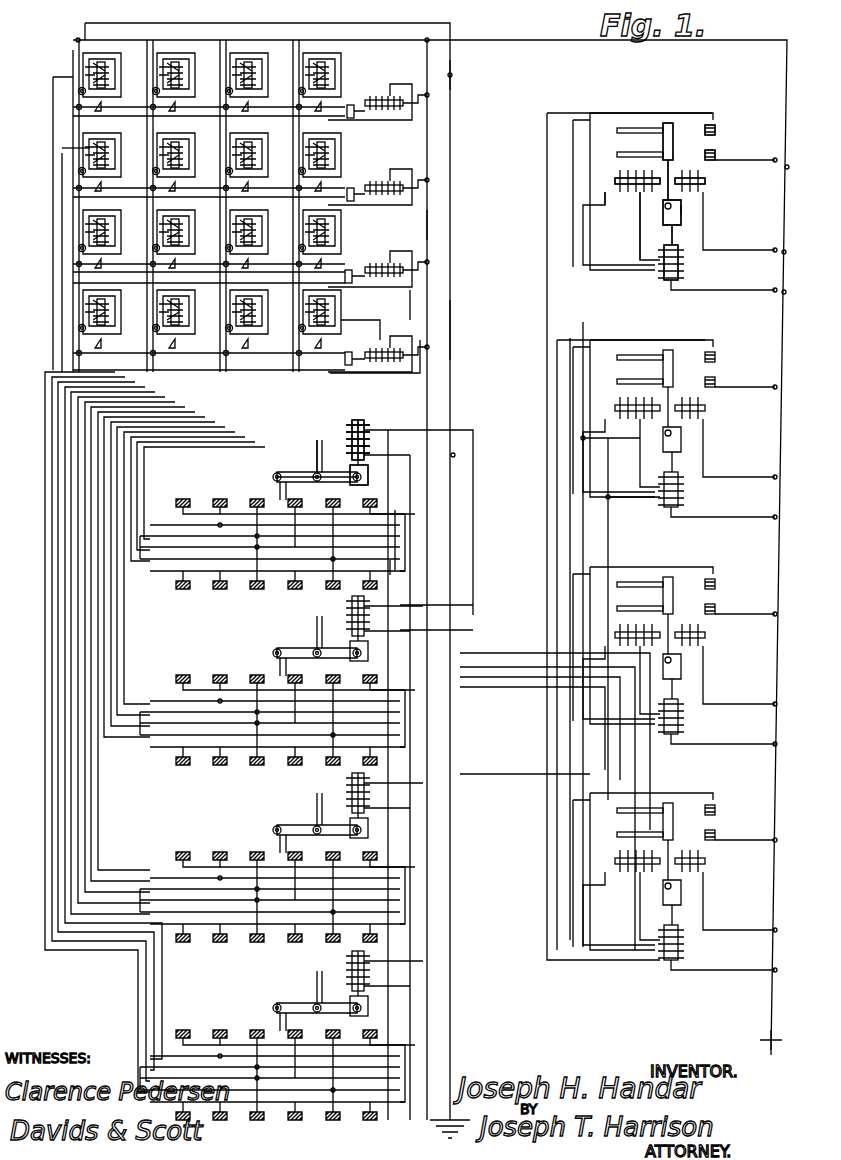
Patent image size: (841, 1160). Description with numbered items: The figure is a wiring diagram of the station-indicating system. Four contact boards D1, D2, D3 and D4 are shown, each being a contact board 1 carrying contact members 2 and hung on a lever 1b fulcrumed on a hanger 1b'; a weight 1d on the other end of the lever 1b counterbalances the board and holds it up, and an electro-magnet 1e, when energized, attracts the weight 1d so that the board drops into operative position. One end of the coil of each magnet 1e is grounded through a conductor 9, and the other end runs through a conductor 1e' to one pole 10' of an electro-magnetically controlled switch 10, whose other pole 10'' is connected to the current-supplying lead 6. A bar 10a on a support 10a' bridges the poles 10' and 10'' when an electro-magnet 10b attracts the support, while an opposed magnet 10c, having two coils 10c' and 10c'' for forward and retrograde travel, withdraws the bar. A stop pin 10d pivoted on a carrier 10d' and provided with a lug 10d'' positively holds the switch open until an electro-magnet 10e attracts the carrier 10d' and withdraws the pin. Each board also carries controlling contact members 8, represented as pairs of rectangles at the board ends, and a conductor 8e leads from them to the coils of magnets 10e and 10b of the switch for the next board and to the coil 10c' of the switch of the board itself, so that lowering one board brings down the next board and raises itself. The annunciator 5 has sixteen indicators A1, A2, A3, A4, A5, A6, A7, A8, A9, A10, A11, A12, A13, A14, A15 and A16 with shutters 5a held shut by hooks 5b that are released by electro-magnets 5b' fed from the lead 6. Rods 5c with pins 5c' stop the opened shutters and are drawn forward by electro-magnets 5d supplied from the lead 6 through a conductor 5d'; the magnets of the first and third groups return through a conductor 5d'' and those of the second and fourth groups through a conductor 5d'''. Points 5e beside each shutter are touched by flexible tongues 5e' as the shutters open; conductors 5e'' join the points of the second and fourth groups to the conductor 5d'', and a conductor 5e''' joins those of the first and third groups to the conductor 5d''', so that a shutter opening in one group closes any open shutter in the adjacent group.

The contact board 1 is at (405, 507).
The lever 1b is at (297, 726).
The hanger 1b' is at (301, 703).
The weight 1d is at (368, 474).
The electro-magnet 1e is at (355, 688).
The conductor 1e' is at (556, 454).
The contact members 2 is at (216, 506).
The annunciator 5 is at (440, 372).
The shutters 5a is at (349, 352).
The hooks 5b is at (364, 321).
The electro-magnets 5b' is at (55, 153).
The rod 5c is at (349, 232).
The pins 5c' is at (182, 316).
The electro-magnets 5d is at (426, 231).
The conductor 5d' is at (471, 74).
The conductor 5d'' is at (461, 225).
The conductor 5d''' is at (452, 301).
The points 5e is at (323, 244).
The flexible tongues 5e' is at (358, 326).
The conductors 5e'' is at (449, 192).
The conductor 5e''' is at (450, 225).
The lead 6 is at (772, 350).
The controlling contact member 8 is at (178, 502).
The conductor 8e is at (630, 290).
The conductor 9 is at (451, 335).
The electro-magnetically controlled switch 10 is at (675, 531).
The pole 10' is at (730, 466).
The pole 10'' is at (725, 493).
The bar 10a is at (635, 480).
The support 10a' is at (618, 180).
The electro-magnet 10b is at (706, 190).
The magnet 10c is at (594, 524).
The coil 10c' is at (621, 565).
The coil 10c'' is at (576, 549).
The stop pin 10d is at (710, 556).
The carrier 10d' is at (710, 575).
The lug 10d'' is at (729, 237).
The electro-magnet 10e is at (672, 285).
The indicator A1 is at (107, 75).
The indicator A2 is at (109, 158).
The indicator A3 is at (181, 75).
The indicator A4 is at (183, 158).
The indicator A5 is at (254, 75).
The indicator A6 is at (256, 160).
The indicator A7 is at (330, 78).
The indicator A8 is at (327, 162).
The indicator A9 is at (100, 233).
The indicator A10 is at (100, 312).
The indicator A11 is at (174, 234).
The indicator A12 is at (174, 316).
The indicator A13 is at (247, 234).
The indicator A14 is at (247, 316).
The indicator A15 is at (330, 239).
The indicator A16 is at (331, 319).
The contact board D1 is at (112, 1048).
The contact board D2 is at (126, 860).
The contact board D3 is at (156, 681).
The contact board D4 is at (198, 516).